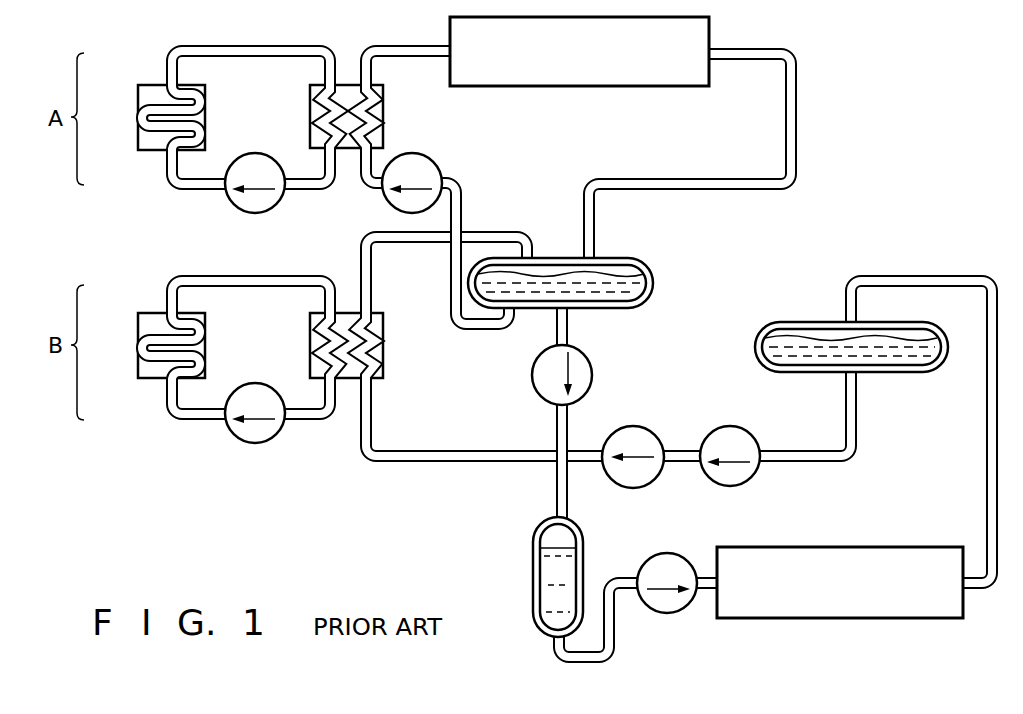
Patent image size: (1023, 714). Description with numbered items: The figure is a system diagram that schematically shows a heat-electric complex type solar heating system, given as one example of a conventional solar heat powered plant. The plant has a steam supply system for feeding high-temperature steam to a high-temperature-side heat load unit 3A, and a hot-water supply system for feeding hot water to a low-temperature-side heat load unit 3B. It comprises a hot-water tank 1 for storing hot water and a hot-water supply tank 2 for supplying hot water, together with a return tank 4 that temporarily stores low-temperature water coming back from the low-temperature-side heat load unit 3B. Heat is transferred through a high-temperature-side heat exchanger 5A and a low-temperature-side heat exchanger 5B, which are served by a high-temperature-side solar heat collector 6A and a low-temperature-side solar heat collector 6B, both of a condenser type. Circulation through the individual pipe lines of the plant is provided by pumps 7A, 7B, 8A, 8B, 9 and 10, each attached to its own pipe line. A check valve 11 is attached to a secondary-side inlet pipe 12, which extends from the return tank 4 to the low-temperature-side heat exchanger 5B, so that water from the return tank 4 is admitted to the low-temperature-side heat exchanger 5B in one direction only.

The hot-water tank 1 is at (634, 258).
The hot-water supply tank 2 is at (533, 565).
The high-temperature-side heat load unit 3A is at (575, 86).
The low-temperature-side heat load unit 3B is at (832, 547).
The return tank 4 is at (808, 322).
The high-temperature-side heat exchanger 5A is at (383, 100).
The low-temperature-side heat exchanger 5B is at (383, 340).
The high-temperature-side solar heat collector 6A is at (151, 84).
The low-temperature-side solar heat collector 6B is at (151, 312).
The pump 7A is at (255, 213).
The pump 7B is at (255, 443).
The pump 8A is at (436, 161).
The pump 8B is at (736, 426).
The pump 9 is at (532, 376).
The pump 10 is at (668, 553).
The check valve 11 is at (634, 426).
The secondary-side inlet pipe 12 is at (432, 462).